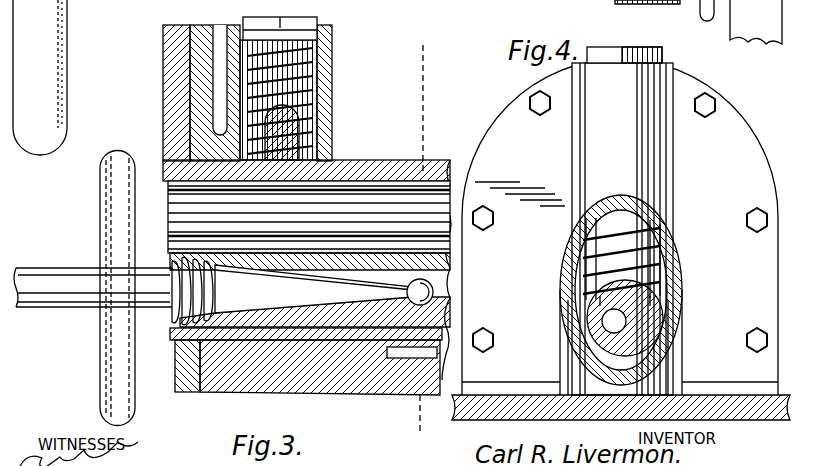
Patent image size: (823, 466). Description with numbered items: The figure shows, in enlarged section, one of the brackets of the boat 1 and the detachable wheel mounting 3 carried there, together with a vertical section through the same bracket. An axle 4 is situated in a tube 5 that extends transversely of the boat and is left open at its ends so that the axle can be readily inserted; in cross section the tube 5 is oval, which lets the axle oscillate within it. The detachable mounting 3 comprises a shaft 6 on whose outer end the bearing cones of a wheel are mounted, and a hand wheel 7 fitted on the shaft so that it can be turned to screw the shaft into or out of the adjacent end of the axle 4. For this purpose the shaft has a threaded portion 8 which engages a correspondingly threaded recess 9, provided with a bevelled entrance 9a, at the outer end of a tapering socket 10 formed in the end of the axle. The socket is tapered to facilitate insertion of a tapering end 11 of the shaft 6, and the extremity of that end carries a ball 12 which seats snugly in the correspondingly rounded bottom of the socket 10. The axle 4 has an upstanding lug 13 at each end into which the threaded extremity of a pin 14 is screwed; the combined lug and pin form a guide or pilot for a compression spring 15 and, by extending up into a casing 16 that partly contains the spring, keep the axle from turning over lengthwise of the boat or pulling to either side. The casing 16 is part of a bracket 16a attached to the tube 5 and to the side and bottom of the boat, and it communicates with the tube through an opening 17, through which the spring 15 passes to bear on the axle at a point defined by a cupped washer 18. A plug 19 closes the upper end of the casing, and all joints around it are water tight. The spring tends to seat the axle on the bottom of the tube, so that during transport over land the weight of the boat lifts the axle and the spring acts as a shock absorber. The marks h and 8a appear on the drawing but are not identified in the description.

In FIG. 3, the boat 1 is at (178, 105).
In FIG. 4, the boat 1 is at (510, 408).
In FIG. 3, the detachable mounting 3 is at (149, 215).
In FIG. 3, the axle 4 is at (396, 262).
In FIG. 4, the axle 4 is at (668, 307).
In FIG. 3, the tube 5 is at (430, 180).
In FIG. 4, the tube 5 is at (666, 214).
In FIG. 3, the shaft 6 is at (66, 290).
In FIG. 3, the hand wheel 7 is at (85, 365).
In FIG. 4, the hand wheel 7 is at (698, 10).
In FIG. 3, the threaded portion 8 is at (178, 316).
In FIG. 3, the threaded recess 9 is at (175, 342).
In FIG. 3, the bevelled entrance 9a is at (179, 266).
In FIG. 3, the tapering socket 10 is at (325, 302).
In FIG. 4, the tapering socket 10 is at (668, 352).
In FIG. 3, the tapering end 11 is at (300, 303).
In FIG. 3, the ball 12 is at (420, 280).
In FIG. 4, the ball 12 is at (665, 332).
In FIG. 3, the upstanding lug 13 is at (318, 262).
In FIG. 3, the pin 14 is at (300, 125).
In FIG. 4, the pin 14 is at (668, 236).
In FIG. 3, the compression spring 15 is at (318, 62).
In FIG. 4, the compression spring 15 is at (668, 262).
In FIG. 3, the casing 16 is at (333, 86).
In FIG. 4, the casing 16 is at (660, 154).
In FIG. 3, the bracket 16a is at (200, 54).
In FIG. 4, the bracket 16a is at (620, 227).
In FIG. 3, the opening 17 is at (342, 164).
In FIG. 3, the cupped washer 18 is at (350, 262).
In FIG. 4, the cupped washer 18 is at (668, 286).
In FIG. 3, the plug 19 is at (318, 22).
In FIG. 4, the plug 19 is at (660, 55).
In FIG. 3, the handle slot h is at (55, 82).
In FIG. 3, the collar 8a is at (34, 8).